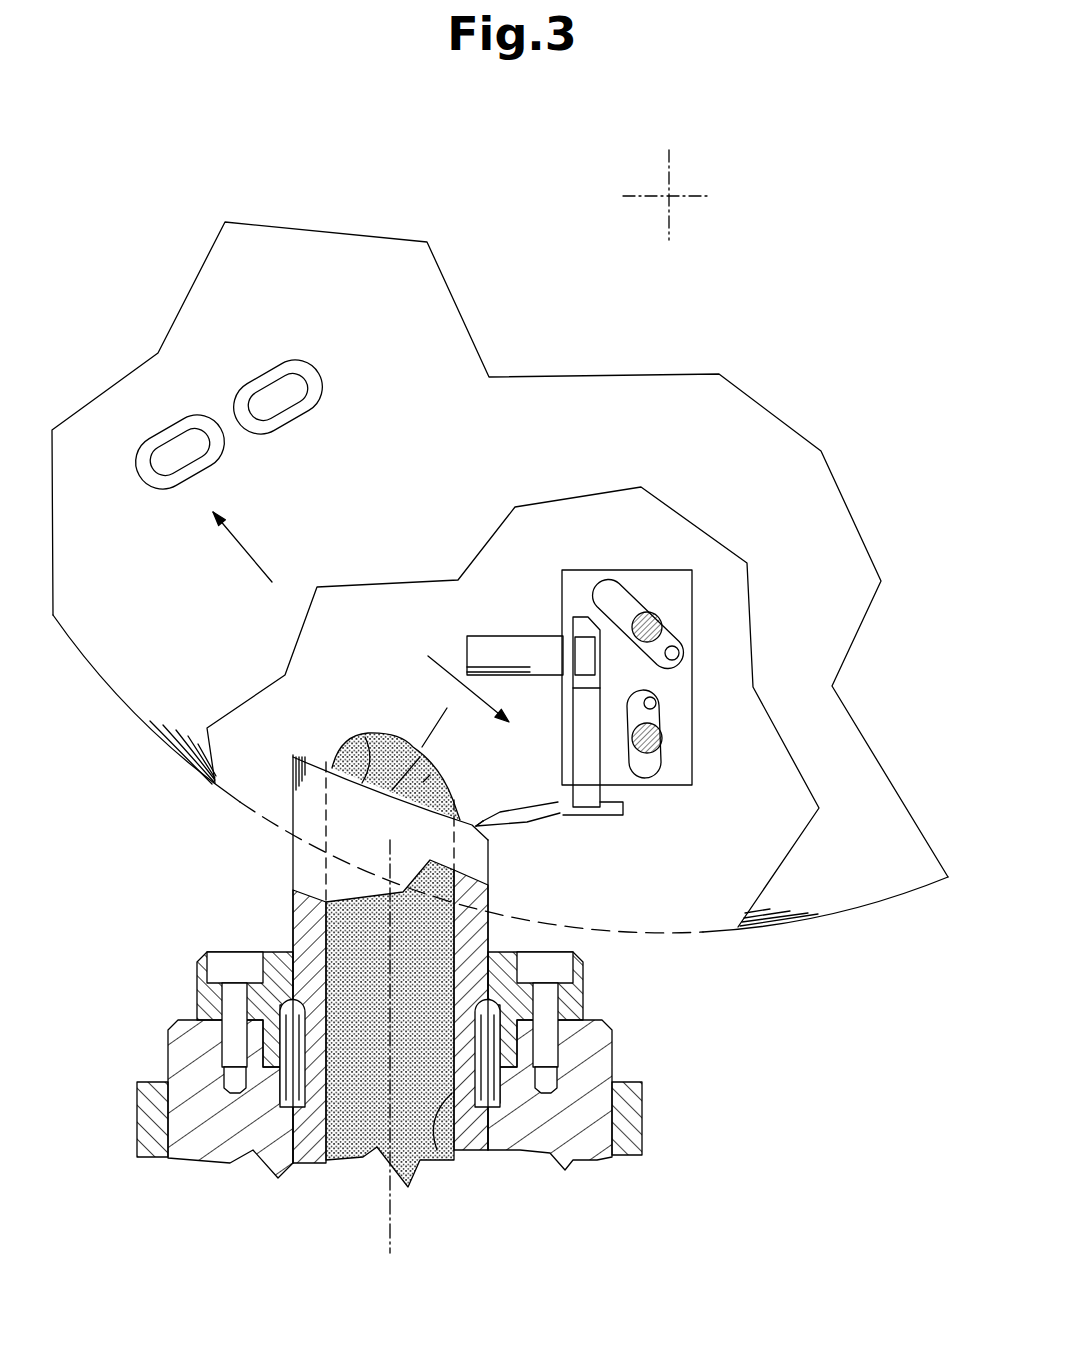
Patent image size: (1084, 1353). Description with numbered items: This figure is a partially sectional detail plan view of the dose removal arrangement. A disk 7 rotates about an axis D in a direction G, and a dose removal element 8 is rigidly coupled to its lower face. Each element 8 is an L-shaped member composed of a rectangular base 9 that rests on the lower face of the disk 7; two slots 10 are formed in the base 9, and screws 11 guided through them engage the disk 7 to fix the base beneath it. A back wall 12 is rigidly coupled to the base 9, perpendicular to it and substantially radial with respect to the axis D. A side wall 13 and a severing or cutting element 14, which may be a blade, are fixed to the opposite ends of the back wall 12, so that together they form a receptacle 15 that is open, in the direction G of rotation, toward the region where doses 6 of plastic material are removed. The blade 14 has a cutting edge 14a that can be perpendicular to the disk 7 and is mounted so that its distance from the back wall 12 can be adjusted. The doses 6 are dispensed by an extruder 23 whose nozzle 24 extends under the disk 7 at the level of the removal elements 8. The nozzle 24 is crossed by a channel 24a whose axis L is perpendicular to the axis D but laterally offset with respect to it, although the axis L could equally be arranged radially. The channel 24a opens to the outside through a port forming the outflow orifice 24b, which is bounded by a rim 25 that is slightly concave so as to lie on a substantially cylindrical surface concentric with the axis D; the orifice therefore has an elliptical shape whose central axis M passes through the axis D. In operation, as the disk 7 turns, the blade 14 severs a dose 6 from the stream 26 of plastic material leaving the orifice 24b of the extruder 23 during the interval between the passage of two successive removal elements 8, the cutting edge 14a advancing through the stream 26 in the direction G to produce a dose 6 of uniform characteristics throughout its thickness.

The dose 6 is at (423, 782).
The disk 7 is at (831, 591).
The dose removal element 8 is at (643, 556).
The rectangular base 9 is at (677, 757).
The slot 10 is at (652, 703).
The screw 11 is at (660, 613).
The back wall 12 is at (583, 793).
The side wall 13 is at (503, 652).
The severing or cutting element (blade) 14 is at (525, 820).
The cutting edge 14a is at (476, 820).
The receptacle 15 is at (455, 674).
The extruder 23 is at (643, 1120).
The nozzle 24 is at (296, 904).
The channel 24a is at (442, 1163).
The outflow orifice 24b is at (350, 737).
The rim 25 is at (313, 755).
The stream 26 is at (352, 1143).
The axis of rotation of the disk D is at (669, 190).
The direction of rotation G is at (248, 553).
The central axis of the orifice M is at (437, 732).
The axis of the channel L is at (393, 1233).